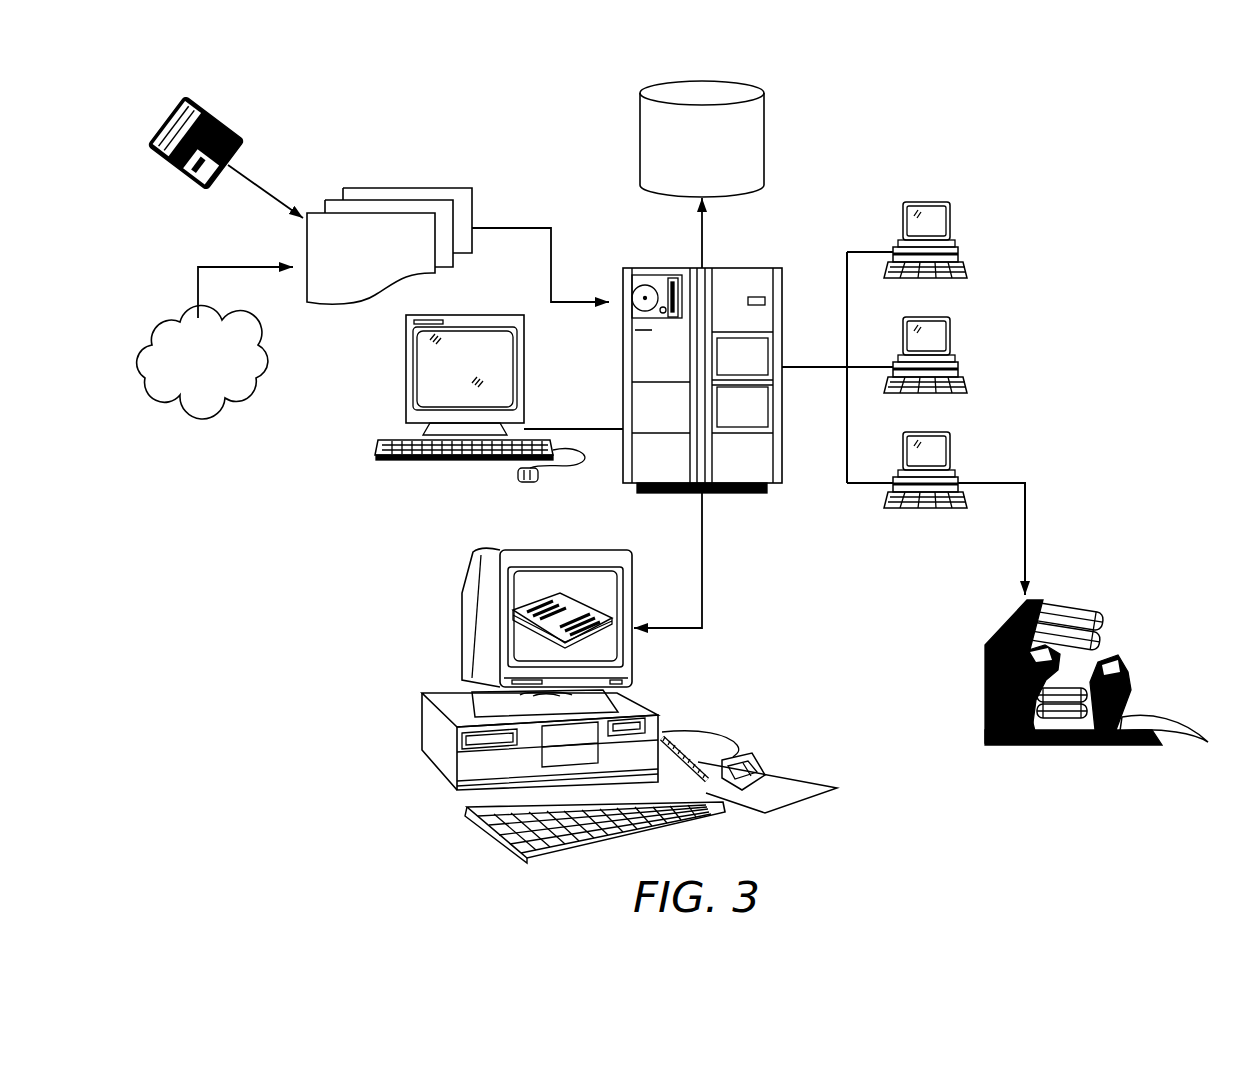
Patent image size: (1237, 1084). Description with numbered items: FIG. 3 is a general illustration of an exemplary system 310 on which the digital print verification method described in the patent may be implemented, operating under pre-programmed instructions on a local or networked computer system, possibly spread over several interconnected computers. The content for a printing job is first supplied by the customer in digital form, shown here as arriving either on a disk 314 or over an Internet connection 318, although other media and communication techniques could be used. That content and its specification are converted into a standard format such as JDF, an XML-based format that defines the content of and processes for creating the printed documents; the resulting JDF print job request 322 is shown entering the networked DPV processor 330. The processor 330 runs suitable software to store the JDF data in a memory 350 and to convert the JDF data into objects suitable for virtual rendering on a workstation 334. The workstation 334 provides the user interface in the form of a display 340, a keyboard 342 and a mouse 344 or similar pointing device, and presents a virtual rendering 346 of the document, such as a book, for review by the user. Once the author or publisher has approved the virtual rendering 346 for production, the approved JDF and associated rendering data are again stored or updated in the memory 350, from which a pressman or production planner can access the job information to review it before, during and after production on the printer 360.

The system 310 is at (1056, 247).
The disk 314 is at (207, 126).
The Internet connection 318 is at (195, 398).
The JDF print job request 322 is at (407, 187).
The networked DPV processor 330 is at (642, 267).
The workstation 334 is at (568, 471).
The display 340 is at (541, 669).
The keyboard 342 is at (463, 812).
The mouse 344 is at (750, 770).
The virtual rendering 346 is at (567, 620).
The memory 350 is at (638, 140).
The printer 360 is at (1065, 604).